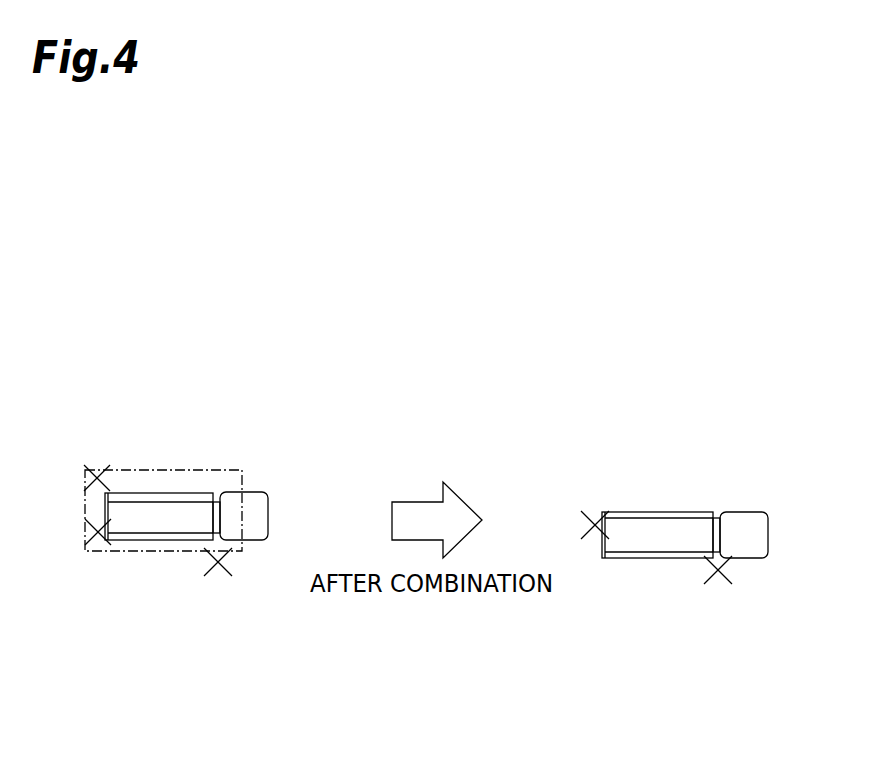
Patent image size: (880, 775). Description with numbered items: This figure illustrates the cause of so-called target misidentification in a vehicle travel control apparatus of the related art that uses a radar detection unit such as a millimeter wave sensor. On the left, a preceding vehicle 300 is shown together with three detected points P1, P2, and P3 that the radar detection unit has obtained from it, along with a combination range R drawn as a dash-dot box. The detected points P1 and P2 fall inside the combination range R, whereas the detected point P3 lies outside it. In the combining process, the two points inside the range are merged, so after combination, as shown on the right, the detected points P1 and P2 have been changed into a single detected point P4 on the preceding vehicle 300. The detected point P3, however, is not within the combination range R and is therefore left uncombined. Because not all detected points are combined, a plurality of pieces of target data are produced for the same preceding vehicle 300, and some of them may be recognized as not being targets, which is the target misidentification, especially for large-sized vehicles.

The detected point P1 is at (85, 467).
The detected point P2 is at (92, 547).
The detected point P3 is at (213, 567).
The detected point P4 is at (582, 507).
The combination range R is at (162, 468).
The preceding vehicle 300 is at (257, 502).